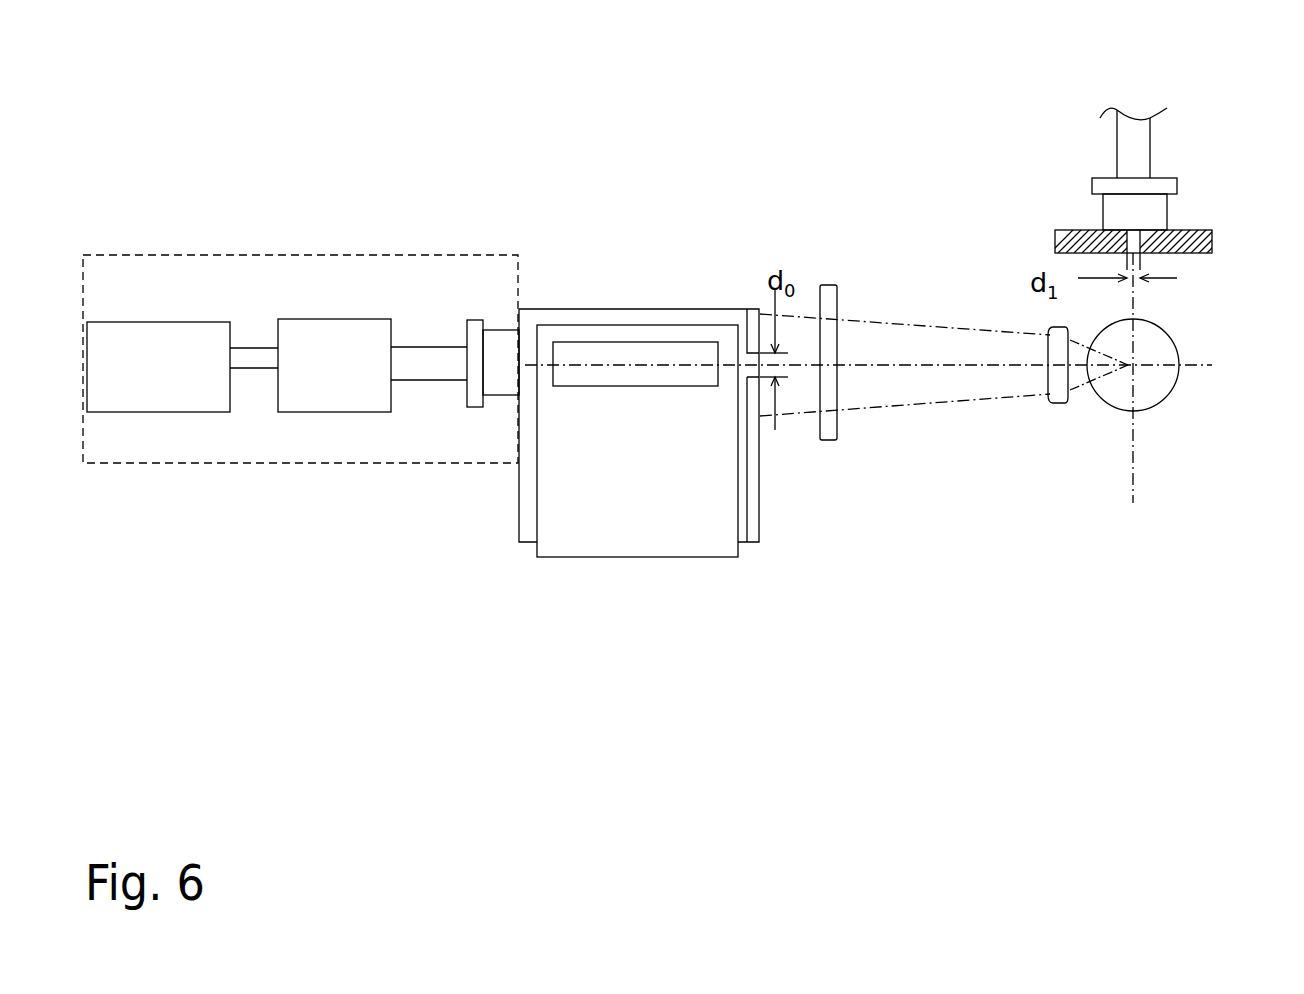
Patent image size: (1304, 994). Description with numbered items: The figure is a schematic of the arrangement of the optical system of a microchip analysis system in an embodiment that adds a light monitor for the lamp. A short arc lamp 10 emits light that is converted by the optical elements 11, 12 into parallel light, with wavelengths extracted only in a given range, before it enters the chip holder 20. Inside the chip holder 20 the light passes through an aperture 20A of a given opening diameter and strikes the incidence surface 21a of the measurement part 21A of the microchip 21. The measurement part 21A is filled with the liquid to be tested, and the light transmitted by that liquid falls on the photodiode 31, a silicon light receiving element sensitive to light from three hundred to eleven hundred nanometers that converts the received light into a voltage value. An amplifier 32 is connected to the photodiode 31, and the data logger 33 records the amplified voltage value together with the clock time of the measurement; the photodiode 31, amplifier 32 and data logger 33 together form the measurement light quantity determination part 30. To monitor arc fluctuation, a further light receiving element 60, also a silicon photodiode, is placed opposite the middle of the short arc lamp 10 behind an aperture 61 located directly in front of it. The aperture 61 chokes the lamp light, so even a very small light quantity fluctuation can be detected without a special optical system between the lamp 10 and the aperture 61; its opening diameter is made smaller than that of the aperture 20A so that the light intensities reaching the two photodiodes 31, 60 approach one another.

The short arc lamp 10 is at (1108, 405).
The optical element 11 is at (1048, 366).
The optical element 12 is at (826, 440).
The chip holder 20 is at (610, 310).
The aperture 20A is at (748, 322).
The microchip 21 is at (545, 542).
The measurement part 21A is at (607, 386).
The incidence surface 21a is at (719, 372).
The measurement light quantity determination part 30 is at (263, 262).
The photodiode 31 is at (498, 338).
The amplifier 32 is at (337, 405).
The data logger 33 is at (123, 405).
The light receiving element 60 is at (1167, 205).
The aperture 61 is at (1140, 258).